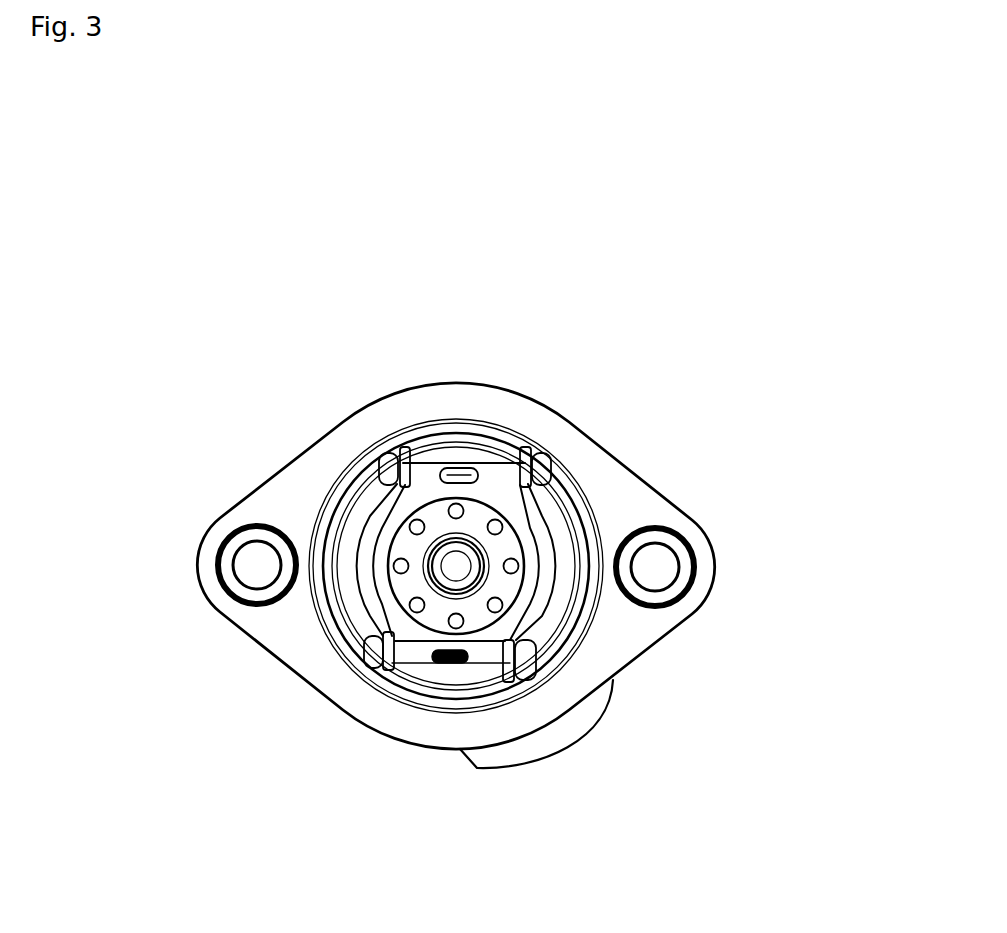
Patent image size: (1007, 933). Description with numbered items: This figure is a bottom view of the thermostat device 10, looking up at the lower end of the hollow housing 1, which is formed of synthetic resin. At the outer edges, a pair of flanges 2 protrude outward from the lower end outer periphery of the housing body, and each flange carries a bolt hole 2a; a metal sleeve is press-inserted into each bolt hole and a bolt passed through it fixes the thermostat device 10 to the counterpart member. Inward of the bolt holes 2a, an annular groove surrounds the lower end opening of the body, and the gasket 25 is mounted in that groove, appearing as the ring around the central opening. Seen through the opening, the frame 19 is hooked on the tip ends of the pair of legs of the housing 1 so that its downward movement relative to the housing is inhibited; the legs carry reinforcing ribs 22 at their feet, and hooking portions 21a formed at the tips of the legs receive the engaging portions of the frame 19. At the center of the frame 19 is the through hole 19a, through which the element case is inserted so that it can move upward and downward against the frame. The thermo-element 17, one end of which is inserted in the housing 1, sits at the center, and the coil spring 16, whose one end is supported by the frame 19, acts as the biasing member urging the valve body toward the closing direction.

The thermostat device 10 is at (189, 354).
The housing 1 is at (300, 458).
The flange 2 is at (205, 540).
The bolt hole 2a is at (222, 583).
The gasket 25 is at (330, 490).
The through hole 19a is at (585, 505).
The frame 19 is at (382, 591).
The rib 22 is at (386, 462).
The hooking portion 21a is at (456, 440).
The coil spring 16 is at (540, 620).
The thermo-element 17 is at (470, 562).